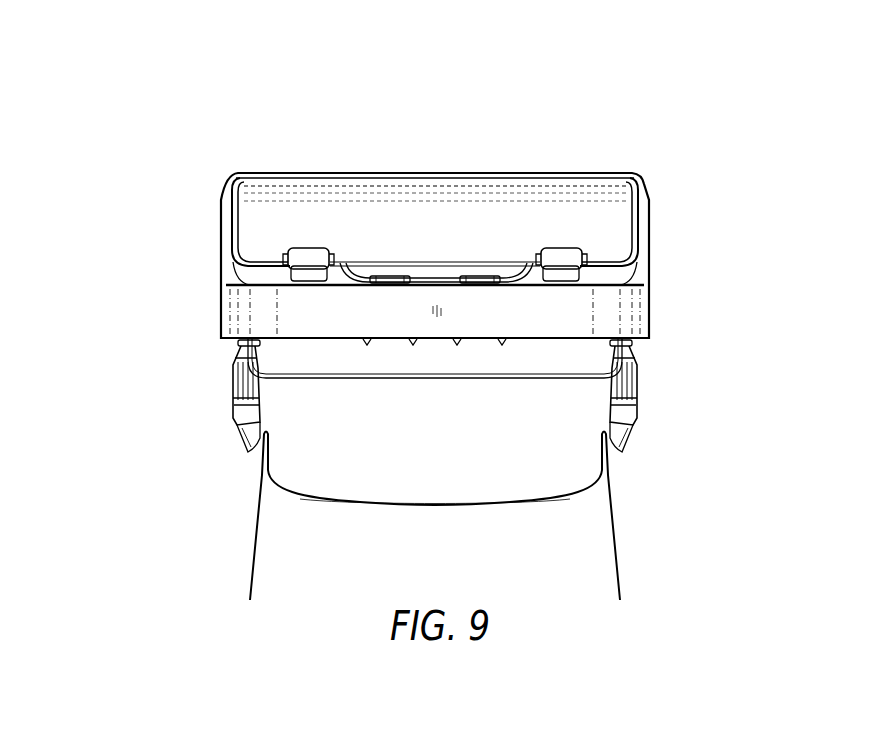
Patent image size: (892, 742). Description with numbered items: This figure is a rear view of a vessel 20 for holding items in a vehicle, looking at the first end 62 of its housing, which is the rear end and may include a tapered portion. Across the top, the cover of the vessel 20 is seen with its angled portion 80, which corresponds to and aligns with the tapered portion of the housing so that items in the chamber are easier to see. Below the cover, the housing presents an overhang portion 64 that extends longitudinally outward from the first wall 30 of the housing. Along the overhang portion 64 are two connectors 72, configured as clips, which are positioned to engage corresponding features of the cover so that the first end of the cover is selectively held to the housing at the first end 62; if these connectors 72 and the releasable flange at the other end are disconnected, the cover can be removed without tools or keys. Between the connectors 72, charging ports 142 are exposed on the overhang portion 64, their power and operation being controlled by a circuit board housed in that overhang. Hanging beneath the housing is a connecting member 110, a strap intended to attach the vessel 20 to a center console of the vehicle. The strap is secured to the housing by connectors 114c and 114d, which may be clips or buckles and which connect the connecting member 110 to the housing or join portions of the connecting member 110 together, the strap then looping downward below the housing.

The vessel 20 is at (196, 126).
The first end 62 is at (678, 194).
The overhang portion 64 is at (580, 312).
The connectors 72 is at (558, 250).
The angled portion 80 is at (601, 193).
The charging ports 142 is at (477, 277).
The connector 114c is at (220, 392).
The connector 114d is at (650, 390).
The first wall 30 is at (550, 357).
The connecting member 110 is at (525, 518).